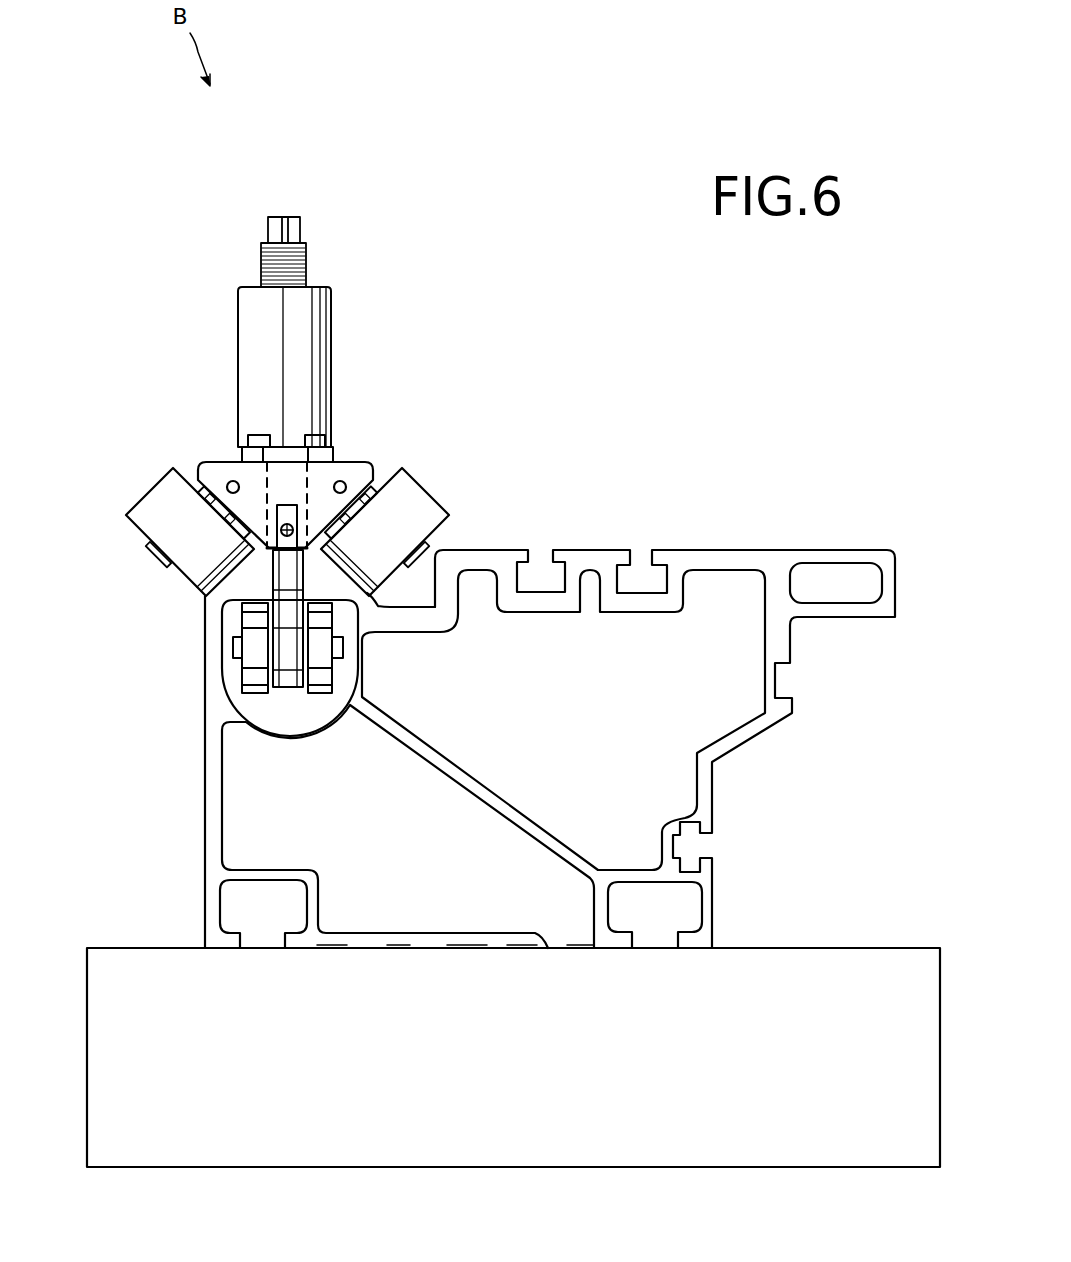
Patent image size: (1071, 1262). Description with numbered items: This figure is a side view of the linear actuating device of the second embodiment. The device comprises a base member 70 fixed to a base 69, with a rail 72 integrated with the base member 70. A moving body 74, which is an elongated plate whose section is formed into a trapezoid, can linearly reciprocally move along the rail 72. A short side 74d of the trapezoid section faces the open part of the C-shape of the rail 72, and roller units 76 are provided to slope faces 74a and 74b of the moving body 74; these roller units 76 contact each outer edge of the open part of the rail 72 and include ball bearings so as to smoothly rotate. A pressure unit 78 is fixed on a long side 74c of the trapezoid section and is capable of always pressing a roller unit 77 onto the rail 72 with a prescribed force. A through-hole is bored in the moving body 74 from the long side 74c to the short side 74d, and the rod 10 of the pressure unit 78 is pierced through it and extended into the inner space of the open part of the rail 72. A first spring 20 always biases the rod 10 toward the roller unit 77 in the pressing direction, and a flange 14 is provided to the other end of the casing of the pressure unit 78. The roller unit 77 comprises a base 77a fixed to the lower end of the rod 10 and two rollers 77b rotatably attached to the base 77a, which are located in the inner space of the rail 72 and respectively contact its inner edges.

The rod 10 is at (282, 452).
The flange 14 is at (287, 455).
The first spring 20 is at (310, 262).
The base 69 is at (818, 966).
The base member 70 is at (667, 523).
The rail 72 is at (243, 580).
The moving body 74 is at (257, 437).
The slope face 74a is at (208, 507).
The slope face 74b is at (367, 512).
The long side 74c is at (227, 458).
The short side 74d is at (205, 558).
The roller unit 76 is at (158, 498).
The roller unit 77 is at (184, 700).
The base 77a is at (288, 615).
The rollers 77b is at (323, 668).
The pressure unit 78 is at (300, 348).